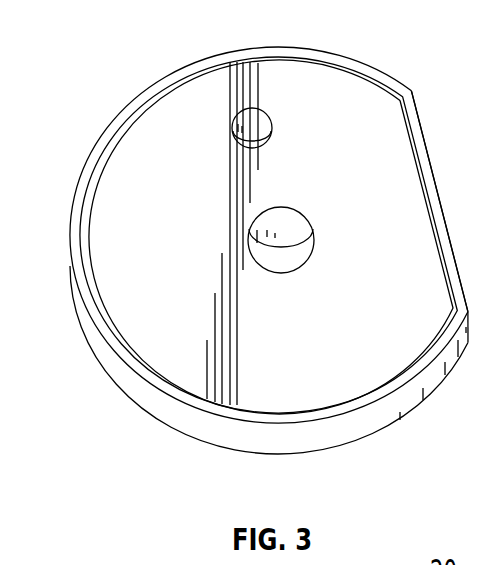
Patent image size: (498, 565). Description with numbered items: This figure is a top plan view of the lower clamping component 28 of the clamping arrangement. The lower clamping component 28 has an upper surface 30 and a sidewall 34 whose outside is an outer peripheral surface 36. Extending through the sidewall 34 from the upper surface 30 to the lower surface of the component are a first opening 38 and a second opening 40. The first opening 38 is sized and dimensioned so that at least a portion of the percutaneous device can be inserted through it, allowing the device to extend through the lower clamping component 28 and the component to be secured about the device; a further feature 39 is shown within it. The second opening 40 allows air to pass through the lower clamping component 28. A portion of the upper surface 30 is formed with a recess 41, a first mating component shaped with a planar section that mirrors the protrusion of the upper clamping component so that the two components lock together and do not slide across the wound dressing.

The lower clamping component 28 is at (131, 65).
The upper surface 30 is at (140, 147).
The sidewall 34 is at (160, 405).
The outer peripheral surface 36 is at (228, 443).
The first opening 38 is at (300, 240).
The aperture bore 39 is at (266, 222).
The second opening 40 is at (260, 128).
The recess 41 is at (382, 137).